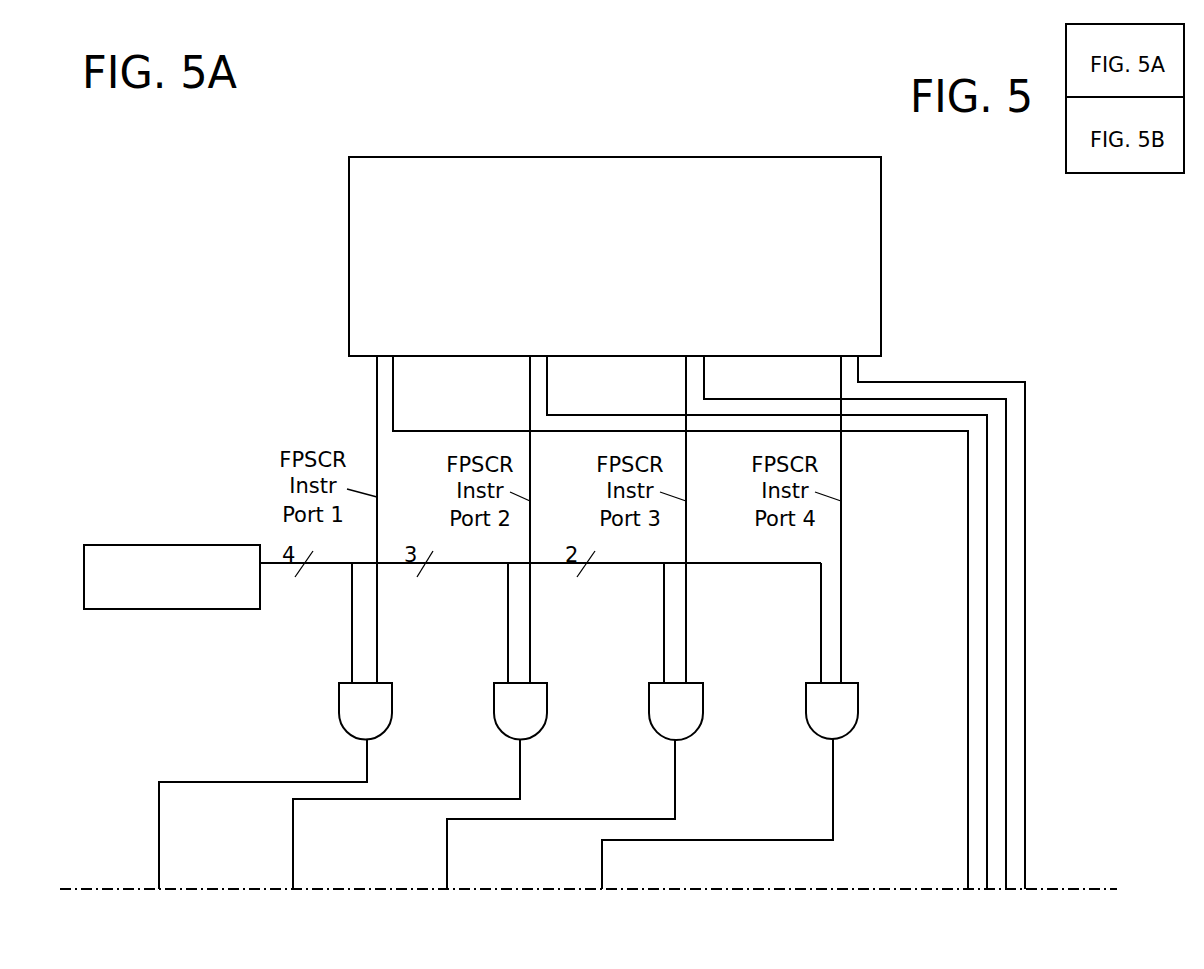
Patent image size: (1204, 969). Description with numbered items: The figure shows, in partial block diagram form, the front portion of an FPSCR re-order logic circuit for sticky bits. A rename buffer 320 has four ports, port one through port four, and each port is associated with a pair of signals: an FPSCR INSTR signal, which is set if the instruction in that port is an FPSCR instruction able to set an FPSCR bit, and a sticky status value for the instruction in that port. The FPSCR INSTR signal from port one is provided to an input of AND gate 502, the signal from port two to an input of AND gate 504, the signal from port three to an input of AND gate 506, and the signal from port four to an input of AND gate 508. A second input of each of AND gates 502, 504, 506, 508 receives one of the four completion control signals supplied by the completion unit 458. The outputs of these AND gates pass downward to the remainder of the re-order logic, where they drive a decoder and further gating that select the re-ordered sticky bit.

The rename buffer 320 is at (348, 203).
The completion unit 458 is at (130, 545).
The AND gate 502 is at (393, 692).
The AND gate 504 is at (548, 692).
The AND gate 506 is at (702, 692).
The AND gate 508 is at (858, 692).